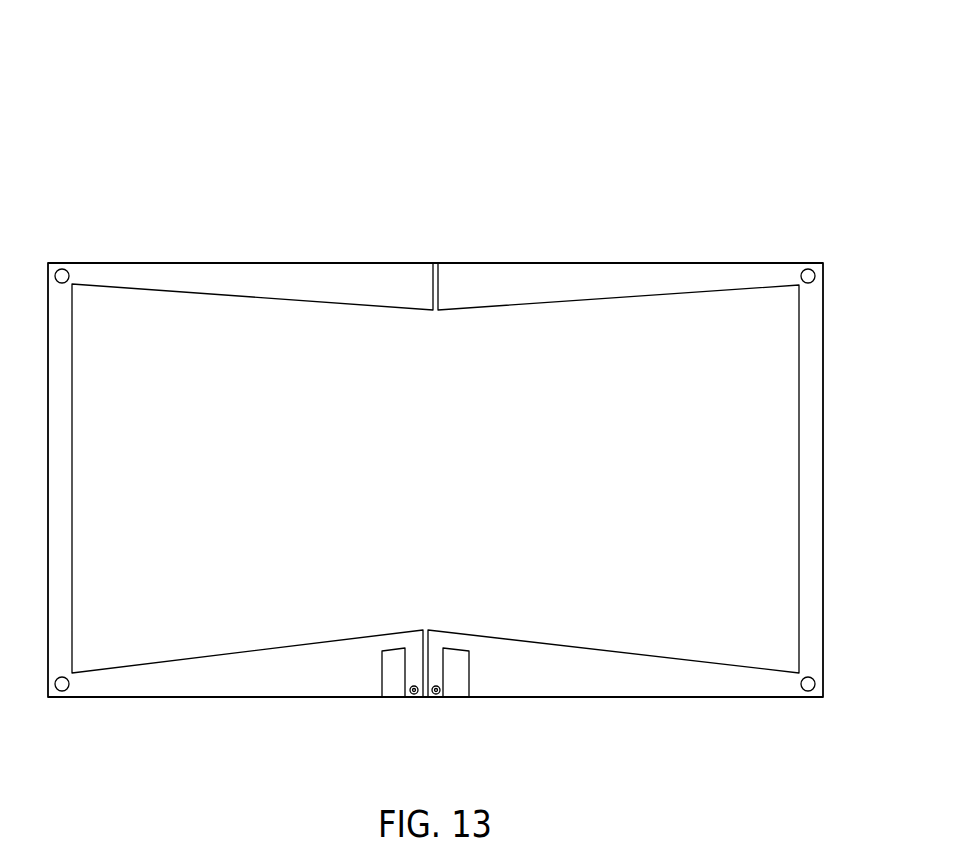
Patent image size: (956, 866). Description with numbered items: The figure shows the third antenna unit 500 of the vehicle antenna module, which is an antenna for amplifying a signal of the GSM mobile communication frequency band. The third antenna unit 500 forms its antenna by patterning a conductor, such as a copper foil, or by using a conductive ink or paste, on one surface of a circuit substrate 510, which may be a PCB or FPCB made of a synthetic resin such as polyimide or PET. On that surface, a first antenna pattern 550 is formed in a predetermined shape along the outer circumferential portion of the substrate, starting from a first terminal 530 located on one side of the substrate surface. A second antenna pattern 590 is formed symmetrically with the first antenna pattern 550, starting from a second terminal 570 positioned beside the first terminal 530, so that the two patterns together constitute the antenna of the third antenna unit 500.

The third antenna unit 500 is at (689, 107).
The circuit substrate 510 is at (187, 385).
The first terminal 530 is at (414, 697).
The first antenna pattern 550 is at (279, 276).
The second terminal 570 is at (436, 697).
The second antenna pattern 590 is at (685, 278).